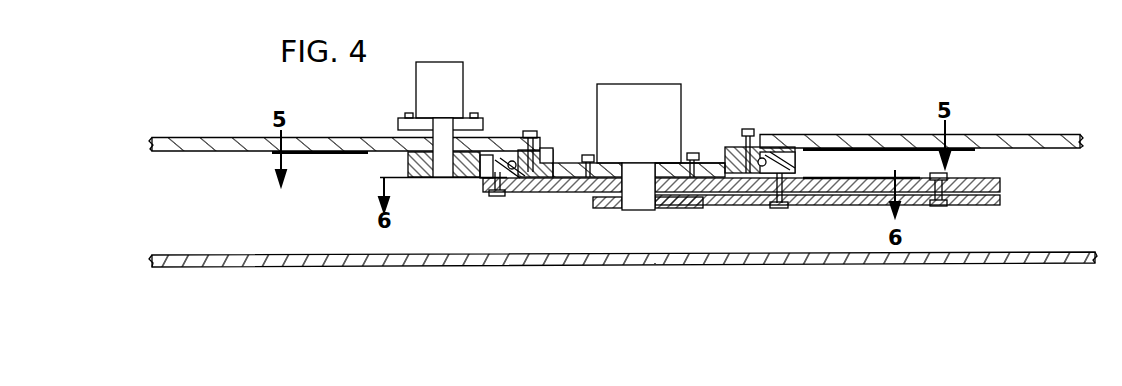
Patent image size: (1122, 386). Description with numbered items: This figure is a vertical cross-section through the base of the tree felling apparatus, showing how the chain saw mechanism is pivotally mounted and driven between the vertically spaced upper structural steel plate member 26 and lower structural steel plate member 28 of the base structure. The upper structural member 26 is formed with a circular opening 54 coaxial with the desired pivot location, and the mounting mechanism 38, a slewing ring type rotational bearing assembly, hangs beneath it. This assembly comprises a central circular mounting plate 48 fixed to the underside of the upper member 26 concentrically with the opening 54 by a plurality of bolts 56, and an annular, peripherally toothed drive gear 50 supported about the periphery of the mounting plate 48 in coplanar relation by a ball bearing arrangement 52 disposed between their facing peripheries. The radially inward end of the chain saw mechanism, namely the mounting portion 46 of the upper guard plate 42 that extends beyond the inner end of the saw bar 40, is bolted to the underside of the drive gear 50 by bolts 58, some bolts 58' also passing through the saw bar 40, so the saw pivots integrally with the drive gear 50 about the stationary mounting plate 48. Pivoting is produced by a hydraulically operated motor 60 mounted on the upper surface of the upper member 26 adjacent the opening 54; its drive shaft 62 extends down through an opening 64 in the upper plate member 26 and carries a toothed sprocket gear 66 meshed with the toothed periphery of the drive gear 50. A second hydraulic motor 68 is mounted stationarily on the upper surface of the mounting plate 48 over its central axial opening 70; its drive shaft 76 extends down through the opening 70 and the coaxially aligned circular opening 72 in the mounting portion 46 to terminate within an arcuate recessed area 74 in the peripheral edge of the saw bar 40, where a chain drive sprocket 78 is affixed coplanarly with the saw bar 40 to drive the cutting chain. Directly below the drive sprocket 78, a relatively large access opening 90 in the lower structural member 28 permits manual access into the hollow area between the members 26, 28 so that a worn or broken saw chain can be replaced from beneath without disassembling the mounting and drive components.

The upper structural steel plate member 26 is at (970, 135).
The lower structural steel plate member 28 is at (920, 264).
The mounting mechanism 38 is at (565, 147).
The saw bar 40 is at (980, 200).
The upper guard plate 42 is at (930, 172).
The mounting portion 46 is at (540, 193).
The mounting plate 48 is at (715, 158).
The drive gear 50 is at (790, 148).
The ball bearing arrangement 52 is at (758, 152).
The circular opening 54 is at (580, 152).
The bolts 56 is at (527, 131).
The bolts 58 is at (474, 203).
The bolts 58' is at (799, 200).
The hydraulically operated motor 60 is at (430, 88).
The drive shaft 62 is at (443, 174).
The opening 64 is at (400, 153).
The toothed sprocket gear 66 is at (472, 178).
The hydraulic motor 68 is at (630, 100).
The central axial opening 70 is at (665, 162).
The circular opening 72 is at (608, 175).
The arcuate recessed area 74 is at (695, 205).
The drive shaft 76 is at (638, 206).
The chain drive sprocket 78 is at (610, 206).
The access opening 90 is at (655, 263).